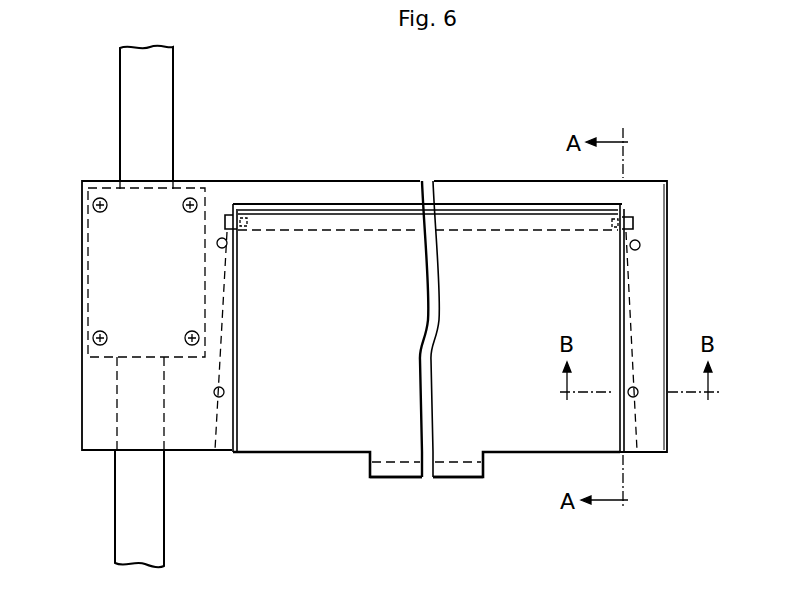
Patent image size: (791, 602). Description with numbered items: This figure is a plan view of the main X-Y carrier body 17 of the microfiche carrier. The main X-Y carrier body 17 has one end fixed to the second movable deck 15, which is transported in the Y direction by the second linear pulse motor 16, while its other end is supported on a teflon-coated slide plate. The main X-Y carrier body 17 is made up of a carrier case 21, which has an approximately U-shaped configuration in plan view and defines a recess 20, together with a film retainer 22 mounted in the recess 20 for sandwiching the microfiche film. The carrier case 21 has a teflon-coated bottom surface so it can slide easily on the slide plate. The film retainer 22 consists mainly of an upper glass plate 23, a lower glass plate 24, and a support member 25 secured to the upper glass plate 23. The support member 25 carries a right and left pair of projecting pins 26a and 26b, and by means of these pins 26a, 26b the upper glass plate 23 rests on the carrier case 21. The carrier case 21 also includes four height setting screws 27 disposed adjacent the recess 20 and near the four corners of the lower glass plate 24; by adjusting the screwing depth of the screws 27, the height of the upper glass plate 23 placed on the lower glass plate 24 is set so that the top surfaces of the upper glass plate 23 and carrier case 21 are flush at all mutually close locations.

The second movable deck 15 is at (88, 253).
The second linear pulse motor 16 is at (172, 102).
The main X-Y carrier body 17 is at (328, 109).
The recess 20 is at (335, 205).
The carrier case 21 is at (242, 182).
The film retainer 22 is at (302, 400).
The upper glass plate 23 is at (508, 454).
The lower glass plate 24 is at (393, 462).
The support member 25 is at (388, 212).
The projecting pin 26a is at (630, 216).
The projecting pin 26b is at (227, 216).
The height setting screws 27 is at (217, 245).